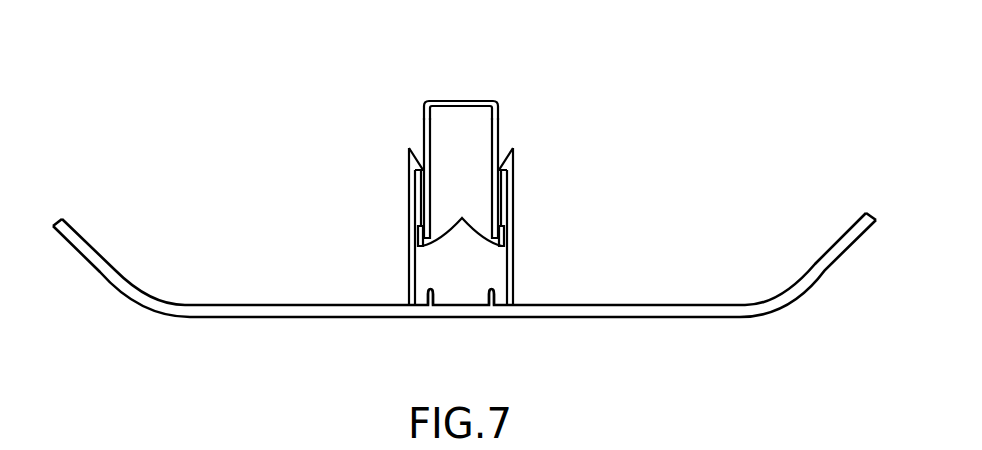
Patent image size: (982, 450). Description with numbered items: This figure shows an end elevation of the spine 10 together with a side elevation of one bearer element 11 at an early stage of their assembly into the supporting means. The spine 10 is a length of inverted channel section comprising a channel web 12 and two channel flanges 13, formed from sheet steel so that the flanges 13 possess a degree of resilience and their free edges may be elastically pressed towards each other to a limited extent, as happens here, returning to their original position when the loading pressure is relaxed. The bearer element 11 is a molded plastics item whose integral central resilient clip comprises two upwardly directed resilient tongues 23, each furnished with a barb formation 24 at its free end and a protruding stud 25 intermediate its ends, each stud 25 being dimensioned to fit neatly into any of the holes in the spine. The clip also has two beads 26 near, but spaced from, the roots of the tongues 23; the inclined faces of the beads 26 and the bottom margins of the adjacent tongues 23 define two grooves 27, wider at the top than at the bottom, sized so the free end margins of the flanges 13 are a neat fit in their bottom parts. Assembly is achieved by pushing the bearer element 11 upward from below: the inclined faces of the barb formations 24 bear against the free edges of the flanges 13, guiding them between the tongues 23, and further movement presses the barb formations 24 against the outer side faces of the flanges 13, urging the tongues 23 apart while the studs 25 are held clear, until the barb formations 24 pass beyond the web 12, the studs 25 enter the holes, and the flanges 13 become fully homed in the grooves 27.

The spine 10 is at (515, 76).
The bearer element 11 is at (266, 333).
The channel web 12 is at (441, 100).
The channel flanges 13 is at (423, 117).
The resilient tongues 23 is at (409, 208).
The barb formation 24 is at (408, 157).
The protruding stud 25 is at (462, 217).
The beads 26 is at (432, 318).
The grooves 27 is at (495, 288).